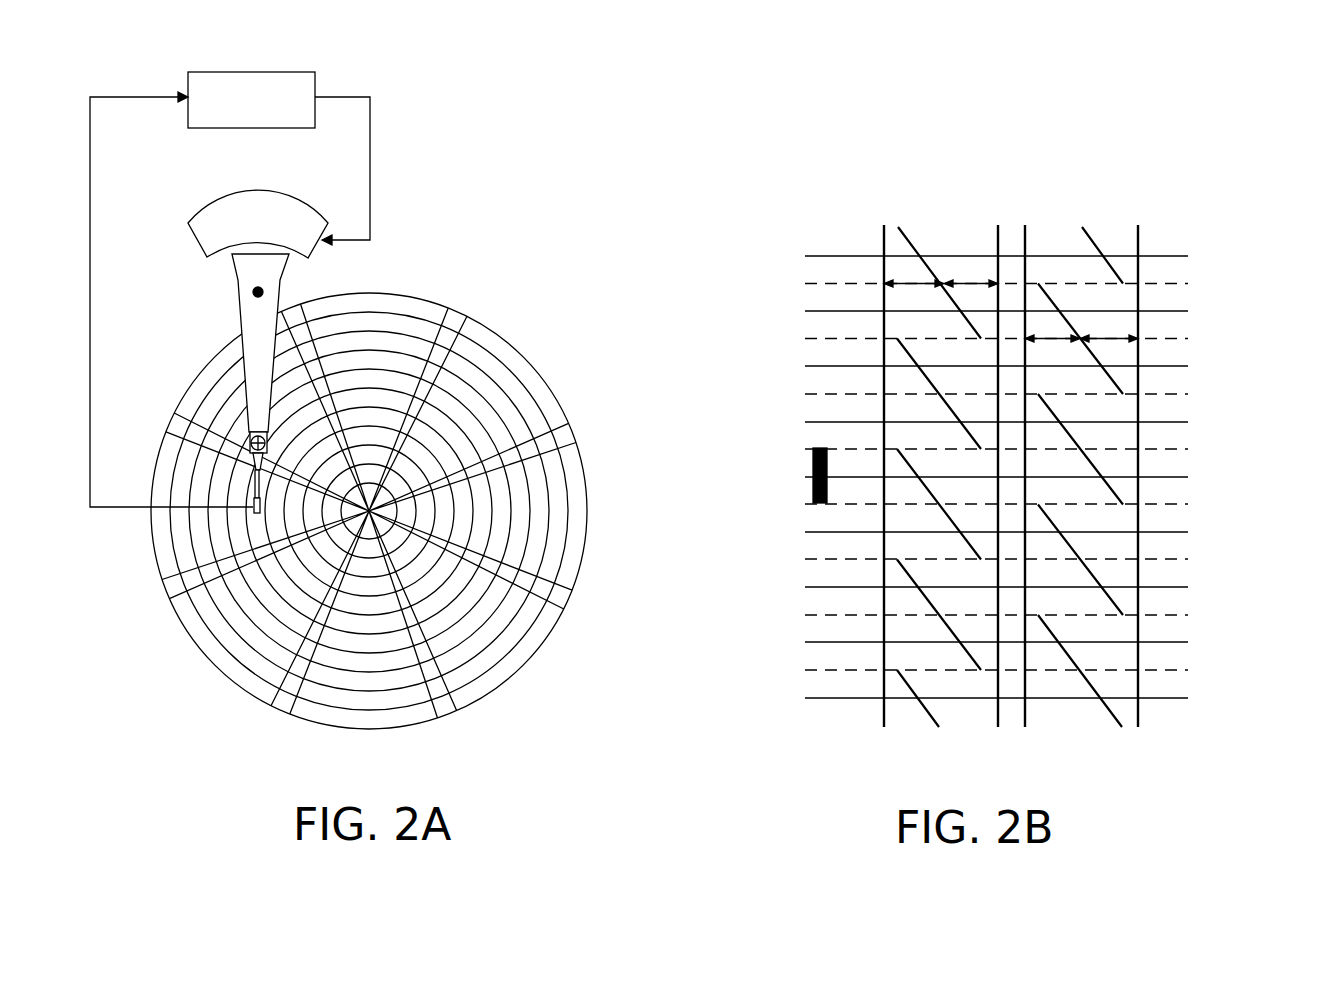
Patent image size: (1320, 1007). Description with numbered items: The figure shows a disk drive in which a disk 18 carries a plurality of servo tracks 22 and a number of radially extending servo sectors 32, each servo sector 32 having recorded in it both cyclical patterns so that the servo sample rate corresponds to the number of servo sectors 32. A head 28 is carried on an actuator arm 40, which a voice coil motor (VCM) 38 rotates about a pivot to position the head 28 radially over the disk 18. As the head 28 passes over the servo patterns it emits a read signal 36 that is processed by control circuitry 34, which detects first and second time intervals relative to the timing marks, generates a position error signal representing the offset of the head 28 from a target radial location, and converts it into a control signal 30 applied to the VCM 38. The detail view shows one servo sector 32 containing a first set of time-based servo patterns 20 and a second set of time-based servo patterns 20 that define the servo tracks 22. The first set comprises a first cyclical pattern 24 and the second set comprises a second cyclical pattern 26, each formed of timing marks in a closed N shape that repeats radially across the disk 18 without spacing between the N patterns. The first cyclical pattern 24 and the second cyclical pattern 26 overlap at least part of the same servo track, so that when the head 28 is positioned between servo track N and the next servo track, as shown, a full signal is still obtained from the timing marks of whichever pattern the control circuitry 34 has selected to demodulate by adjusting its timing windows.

In FIG. 2A, the disk 18 is at (521, 349).
In FIG. 2A, the servo tracks 22 is at (374, 310).
In FIG. 2A, the servo sector 32 is at (456, 322).
In FIG. 2B, the servo sector 32 is at (1011, 467).
In FIG. 2A, the control circuitry 34 is at (248, 128).
In FIG. 2A, the control signal 30 is at (370, 168).
In FIG. 2A, the read signal 36 is at (92, 235).
In FIG. 2A, the voice coil motor (VCM) 38 is at (203, 258).
In FIG. 2A, the actuator arm 40 is at (238, 314).
In FIG. 2A, the head 28 is at (246, 519).
In FIG. 2B, the head 28 is at (812, 460).
In FIG. 2B, the time-based servo patterns 20 is at (998, 727).
In FIG. 2B, the first cyclical pattern 24 is at (880, 558).
In FIG. 2B, the second cyclical pattern 26 is at (1142, 505).